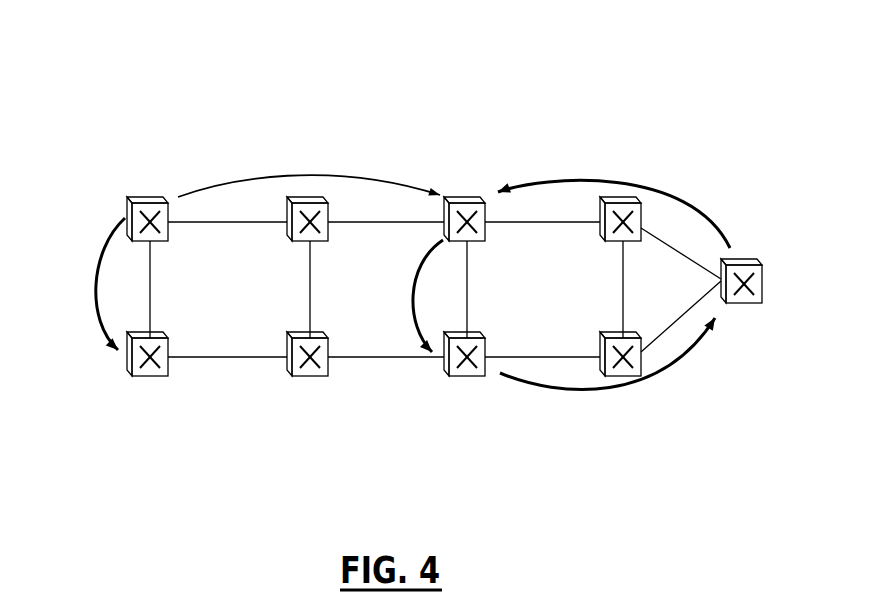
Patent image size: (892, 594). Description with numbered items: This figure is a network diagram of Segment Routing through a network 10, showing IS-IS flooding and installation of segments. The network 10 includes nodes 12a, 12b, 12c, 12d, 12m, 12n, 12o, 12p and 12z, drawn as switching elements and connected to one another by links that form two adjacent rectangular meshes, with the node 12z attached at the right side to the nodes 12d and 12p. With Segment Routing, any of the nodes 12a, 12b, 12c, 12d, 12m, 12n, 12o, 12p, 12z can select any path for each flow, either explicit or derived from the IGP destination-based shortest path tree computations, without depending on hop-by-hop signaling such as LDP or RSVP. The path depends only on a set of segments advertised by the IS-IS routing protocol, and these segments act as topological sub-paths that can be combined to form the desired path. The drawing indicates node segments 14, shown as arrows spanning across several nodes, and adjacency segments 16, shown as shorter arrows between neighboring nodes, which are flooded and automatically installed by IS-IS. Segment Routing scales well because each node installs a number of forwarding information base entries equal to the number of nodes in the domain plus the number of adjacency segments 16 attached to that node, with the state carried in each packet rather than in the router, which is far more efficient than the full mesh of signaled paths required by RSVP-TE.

The network 10 is at (740, 82).
The node 12a is at (147, 197).
The node 12b is at (305, 197).
The node 12c is at (462, 197).
The node 12d is at (620, 197).
The node 12m is at (143, 377).
The node 12n is at (302, 377).
The node 12o is at (463, 377).
The node 12p is at (623, 377).
The node 12z is at (741, 259).
The node segments 14 is at (255, 177).
The adjacency segments 16 is at (97, 290).